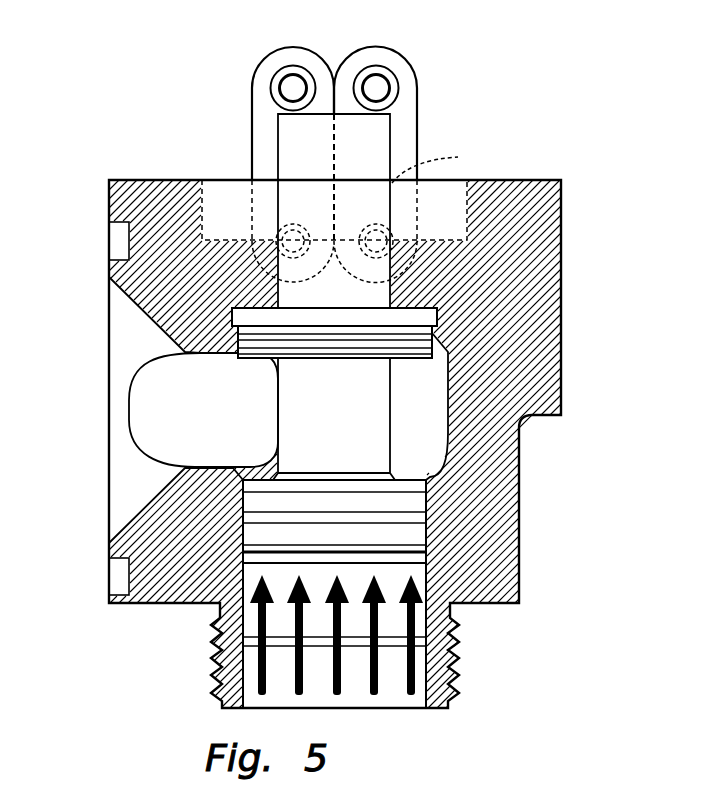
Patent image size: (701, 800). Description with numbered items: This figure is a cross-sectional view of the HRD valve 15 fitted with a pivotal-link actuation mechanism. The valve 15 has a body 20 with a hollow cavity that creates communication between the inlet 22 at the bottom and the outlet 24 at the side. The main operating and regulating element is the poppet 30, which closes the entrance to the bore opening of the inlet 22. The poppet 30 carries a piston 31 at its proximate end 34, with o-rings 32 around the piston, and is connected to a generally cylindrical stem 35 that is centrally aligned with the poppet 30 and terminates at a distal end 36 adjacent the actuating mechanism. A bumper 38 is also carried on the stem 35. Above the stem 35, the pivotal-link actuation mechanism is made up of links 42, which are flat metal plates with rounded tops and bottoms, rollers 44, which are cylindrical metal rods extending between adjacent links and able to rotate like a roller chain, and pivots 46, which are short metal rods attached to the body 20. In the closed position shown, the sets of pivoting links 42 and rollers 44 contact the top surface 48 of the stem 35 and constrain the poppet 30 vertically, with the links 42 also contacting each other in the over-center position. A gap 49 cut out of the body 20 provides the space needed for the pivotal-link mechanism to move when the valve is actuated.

The HRD valve 15 is at (577, 291).
The body 20 is at (548, 255).
The inlet 22 is at (402, 710).
The outlet 24 is at (108, 431).
The poppet 30 is at (246, 392).
The piston 31 is at (321, 537).
The o-rings 32 is at (360, 520).
The proximate end 34 is at (278, 468).
The stem 35 is at (393, 427).
The distal end 36 is at (391, 130).
The bumper 38 is at (432, 313).
The links 42 is at (417, 80).
The rollers 44 is at (381, 77).
The pivots 46 is at (371, 215).
The top surface 48 is at (280, 113).
The gap 49 is at (230, 178).